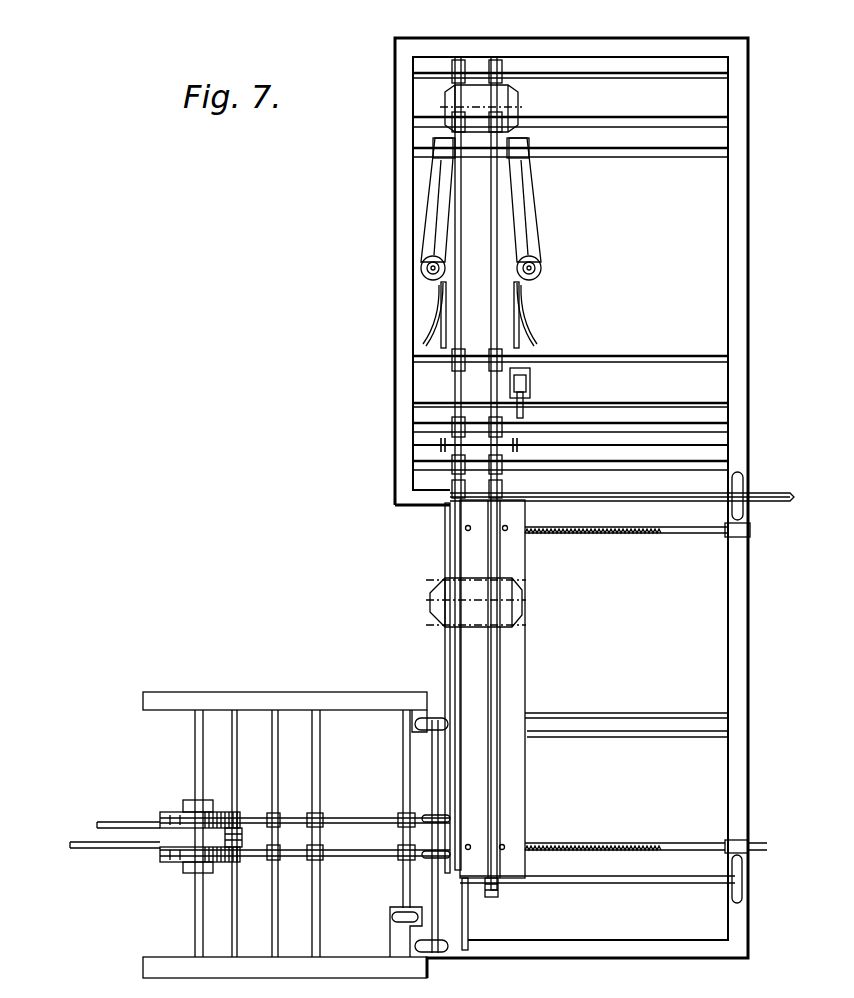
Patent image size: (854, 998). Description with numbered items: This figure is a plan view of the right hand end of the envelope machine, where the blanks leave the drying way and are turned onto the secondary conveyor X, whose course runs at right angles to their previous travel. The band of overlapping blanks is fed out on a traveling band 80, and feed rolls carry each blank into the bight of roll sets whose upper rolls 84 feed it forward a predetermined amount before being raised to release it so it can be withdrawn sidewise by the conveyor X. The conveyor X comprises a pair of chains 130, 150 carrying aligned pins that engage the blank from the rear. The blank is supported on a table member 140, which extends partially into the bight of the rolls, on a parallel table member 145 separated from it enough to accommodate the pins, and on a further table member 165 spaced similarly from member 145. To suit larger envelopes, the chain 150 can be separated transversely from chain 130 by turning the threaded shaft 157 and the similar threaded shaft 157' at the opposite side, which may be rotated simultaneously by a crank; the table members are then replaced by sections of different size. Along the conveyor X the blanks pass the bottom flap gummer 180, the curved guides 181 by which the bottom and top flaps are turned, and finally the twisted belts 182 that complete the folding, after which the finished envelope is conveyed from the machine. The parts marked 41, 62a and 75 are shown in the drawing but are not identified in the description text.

The gears 41 is at (163, 845).
The collars 62a is at (298, 848).
The bracket 75 is at (429, 864).
The traveling band 80 is at (360, 850).
The upper rolls 84 is at (417, 848).
The chain 130 is at (462, 887).
The table member 140 is at (448, 655).
The table member 145 is at (467, 555).
The chain 150 is at (492, 892).
The threaded shaft 157 is at (626, 549).
The threaded shaft 157' is at (646, 857).
The table member 165 is at (515, 672).
The bottom flap gummer 180 is at (530, 382).
The curved guides 181 is at (425, 318).
The twisted belts 182 is at (436, 176).
The conveyor X is at (435, 687).